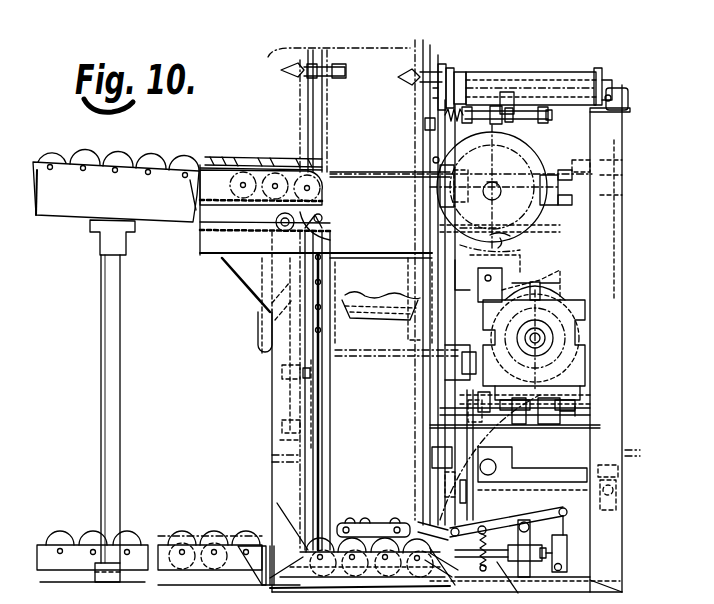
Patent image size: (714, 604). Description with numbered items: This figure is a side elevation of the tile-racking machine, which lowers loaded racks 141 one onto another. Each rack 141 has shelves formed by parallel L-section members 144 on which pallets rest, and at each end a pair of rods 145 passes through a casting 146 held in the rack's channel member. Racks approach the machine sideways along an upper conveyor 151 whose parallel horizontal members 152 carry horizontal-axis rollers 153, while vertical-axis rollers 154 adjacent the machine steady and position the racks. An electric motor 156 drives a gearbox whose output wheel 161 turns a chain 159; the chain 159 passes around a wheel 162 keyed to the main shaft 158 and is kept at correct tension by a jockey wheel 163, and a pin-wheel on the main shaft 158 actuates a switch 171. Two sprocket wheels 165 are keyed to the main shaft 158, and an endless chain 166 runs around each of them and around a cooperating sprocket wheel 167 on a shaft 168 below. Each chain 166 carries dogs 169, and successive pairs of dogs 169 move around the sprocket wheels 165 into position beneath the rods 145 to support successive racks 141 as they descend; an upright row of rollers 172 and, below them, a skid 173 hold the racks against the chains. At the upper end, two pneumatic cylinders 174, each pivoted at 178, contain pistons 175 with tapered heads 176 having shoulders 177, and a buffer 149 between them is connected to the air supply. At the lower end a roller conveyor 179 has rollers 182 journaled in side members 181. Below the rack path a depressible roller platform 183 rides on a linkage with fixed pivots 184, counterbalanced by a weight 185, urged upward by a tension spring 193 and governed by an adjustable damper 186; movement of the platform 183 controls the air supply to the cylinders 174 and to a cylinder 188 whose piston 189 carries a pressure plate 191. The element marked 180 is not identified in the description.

The rack 141 is at (325, 114).
The L-section member 144 is at (410, 303).
The rod 145 is at (348, 68).
The casting 146 is at (425, 251).
The buffer 149 is at (428, 127).
The upper conveyor 151 is at (86, 230).
The horizontal member 152 is at (178, 193).
The roller 153 is at (138, 157).
The roller 154 is at (288, 158).
The electric motor 156 is at (470, 372).
The main shaft 158 is at (548, 205).
The chain 159 is at (504, 275).
The wheel 161 is at (555, 315).
The wheel 162 is at (433, 160).
The jockey wheel 163 is at (522, 252).
The sprocket wheel 165 is at (524, 150).
The endless chain 166 is at (428, 222).
The sprocket wheel 167 is at (602, 396).
The shaft 168 is at (470, 455).
The dog 169 is at (418, 290).
The switch 171 is at (501, 190).
The roller 172 is at (329, 235).
The skid 173 is at (322, 405).
The pneumatic cylinder 174 is at (525, 73).
The piston 175 is at (480, 72).
The tapered head 176 is at (408, 70).
The shoulder 177 is at (435, 72).
The pivot 178 is at (604, 82).
The roller conveyor 179 is at (238, 548).
The lower arm 180 is at (470, 577).
The side member 181 is at (80, 542).
The roller 182 is at (140, 540).
The depressible roller platform 183 is at (348, 541).
The fixed pivot 184 is at (540, 508).
The weight 185 is at (578, 520).
The adjustable damper 186 is at (573, 546).
The cylinder 188 is at (600, 472).
The piston 189 is at (445, 478).
The pressure plate 191 is at (430, 512).
The tension spring 193 is at (500, 580).